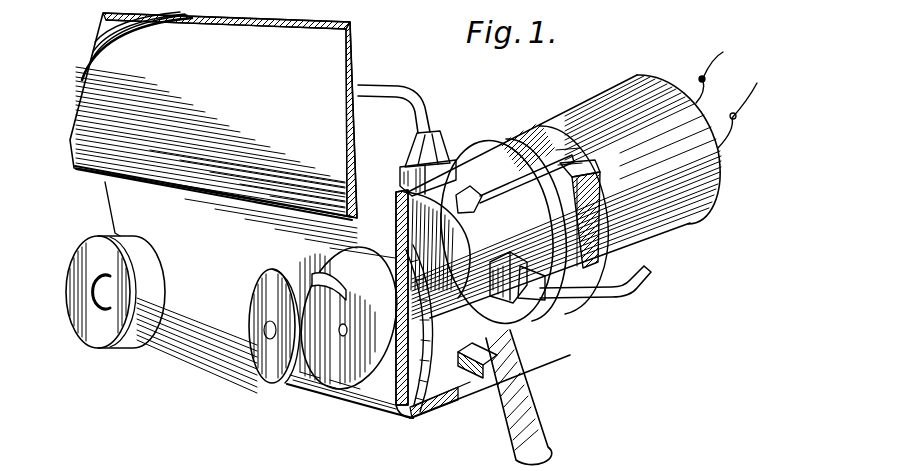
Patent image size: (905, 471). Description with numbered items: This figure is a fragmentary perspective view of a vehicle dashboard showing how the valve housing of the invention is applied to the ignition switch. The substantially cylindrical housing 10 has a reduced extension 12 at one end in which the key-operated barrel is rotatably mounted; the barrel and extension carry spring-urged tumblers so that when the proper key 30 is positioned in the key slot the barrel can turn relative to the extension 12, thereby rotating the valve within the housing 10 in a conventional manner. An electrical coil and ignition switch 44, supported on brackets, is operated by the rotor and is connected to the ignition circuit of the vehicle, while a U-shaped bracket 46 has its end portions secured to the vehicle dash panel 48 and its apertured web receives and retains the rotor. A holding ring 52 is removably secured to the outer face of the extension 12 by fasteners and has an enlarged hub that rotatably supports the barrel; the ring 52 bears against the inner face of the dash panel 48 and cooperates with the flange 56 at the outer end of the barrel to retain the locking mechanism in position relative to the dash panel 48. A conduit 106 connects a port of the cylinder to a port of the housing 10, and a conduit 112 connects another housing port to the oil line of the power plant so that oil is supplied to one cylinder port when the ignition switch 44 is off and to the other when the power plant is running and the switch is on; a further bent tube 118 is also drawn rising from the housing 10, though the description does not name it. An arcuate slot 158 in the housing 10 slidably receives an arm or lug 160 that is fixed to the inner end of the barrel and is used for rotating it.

The housing 10 is at (527, 320).
The reduced extension 12 is at (435, 304).
The key 30 is at (268, 303).
The electrical coil and ignition switch 44 is at (683, 228).
The U-shaped bracket 46 is at (600, 203).
The vehicle dash panel 48 is at (237, 358).
The holding ring 52 is at (427, 372).
The flange 56 is at (364, 382).
The conduit 106 is at (574, 160).
The conduit 112 is at (627, 300).
The supply tube 118 is at (395, 100).
The arcuate slot 158 is at (488, 333).
The arm or lug 160 is at (520, 433).